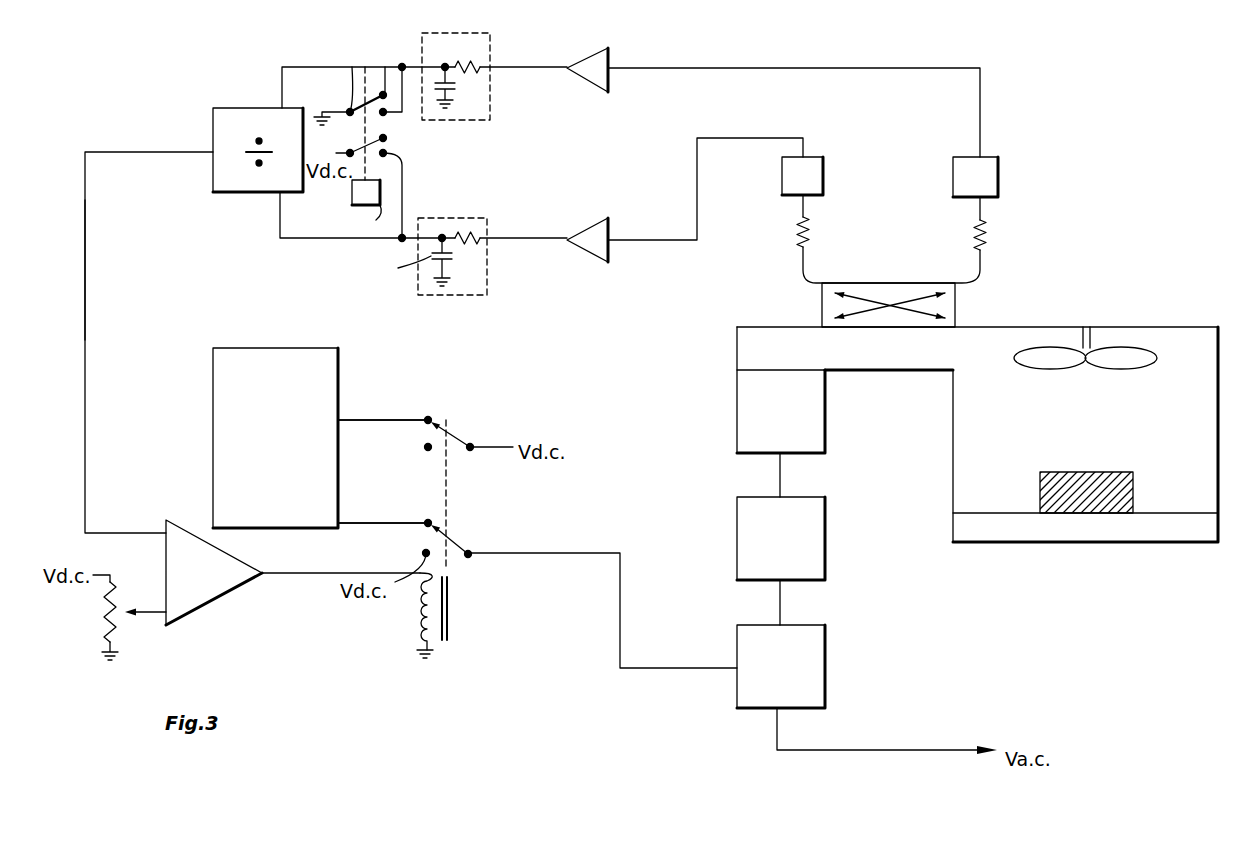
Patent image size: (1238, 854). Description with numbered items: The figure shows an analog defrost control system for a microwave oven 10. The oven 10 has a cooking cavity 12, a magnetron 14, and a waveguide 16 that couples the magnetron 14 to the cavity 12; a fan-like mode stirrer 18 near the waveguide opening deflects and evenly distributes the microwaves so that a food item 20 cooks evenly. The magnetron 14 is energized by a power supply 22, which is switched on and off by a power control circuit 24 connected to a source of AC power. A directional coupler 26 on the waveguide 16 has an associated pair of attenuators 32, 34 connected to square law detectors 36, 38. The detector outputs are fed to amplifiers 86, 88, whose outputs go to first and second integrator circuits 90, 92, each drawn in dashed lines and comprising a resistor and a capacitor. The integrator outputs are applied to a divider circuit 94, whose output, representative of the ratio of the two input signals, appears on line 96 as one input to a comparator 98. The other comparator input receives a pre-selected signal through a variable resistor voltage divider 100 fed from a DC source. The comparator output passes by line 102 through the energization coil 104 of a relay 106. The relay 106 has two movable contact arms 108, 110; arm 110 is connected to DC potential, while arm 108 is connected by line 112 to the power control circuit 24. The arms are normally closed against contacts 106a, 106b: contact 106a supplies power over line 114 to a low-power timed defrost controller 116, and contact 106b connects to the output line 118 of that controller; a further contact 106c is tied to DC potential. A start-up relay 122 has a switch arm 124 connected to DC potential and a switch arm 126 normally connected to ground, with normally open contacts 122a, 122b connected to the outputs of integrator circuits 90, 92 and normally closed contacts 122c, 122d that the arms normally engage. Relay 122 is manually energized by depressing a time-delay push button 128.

The microwave oven 10 is at (1126, 294).
The cooking cavity 12 is at (977, 434).
The magnetron 14 is at (781, 411).
The waveguide 16 is at (884, 372).
The mode stirrer 18 is at (1048, 355).
The food item 20 is at (1108, 470).
The power supply 22 is at (781, 538).
The power control circuit 24 is at (781, 666).
The directional coupler 26 is at (957, 300).
The attenuator 32 is at (812, 235).
The attenuator 34 is at (990, 240).
The square law detector 36 is at (825, 157).
The square law detector 38 is at (1000, 160).
The amplifier 86 is at (588, 226).
The amplifier 88 is at (587, 80).
The first integrator circuit 90 is at (490, 228).
The second integrator circuit 92 is at (492, 42).
The divider circuit 94 is at (258, 150).
The line 96 is at (87, 277).
The comparator 98 is at (214, 572).
The variable resistor voltage divider 100 is at (103, 615).
The line 102 is at (300, 577).
The energization coil 104 is at (424, 603).
The relay 106 is at (486, 580).
The contact 106a is at (432, 417).
The contact 106b is at (427, 520).
The contact 106c is at (425, 447).
The contact arm 108 is at (459, 547).
The contact arm 110 is at (457, 438).
The line 112 is at (622, 621).
The line 114 is at (365, 405).
The low-power timed defrost controller 116 is at (275, 438).
The output line 118 is at (381, 520).
The relay 122 is at (318, 210).
The normally open contact 122a is at (408, 166).
The normally open contact 122b is at (386, 114).
The normally closed contact 122c is at (386, 139).
The normally closed contact 122d is at (384, 76).
The switch arm 124 is at (350, 150).
The switch arm 126 is at (341, 83).
The time-delay push button 128 is at (361, 210).